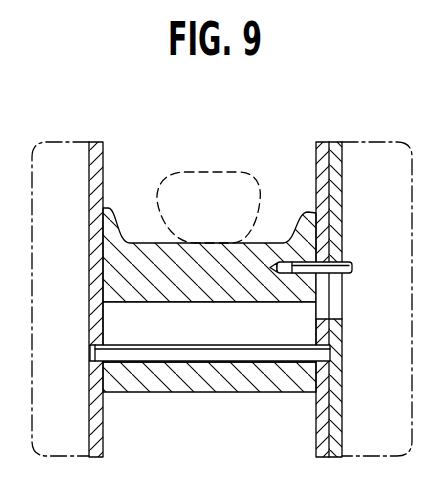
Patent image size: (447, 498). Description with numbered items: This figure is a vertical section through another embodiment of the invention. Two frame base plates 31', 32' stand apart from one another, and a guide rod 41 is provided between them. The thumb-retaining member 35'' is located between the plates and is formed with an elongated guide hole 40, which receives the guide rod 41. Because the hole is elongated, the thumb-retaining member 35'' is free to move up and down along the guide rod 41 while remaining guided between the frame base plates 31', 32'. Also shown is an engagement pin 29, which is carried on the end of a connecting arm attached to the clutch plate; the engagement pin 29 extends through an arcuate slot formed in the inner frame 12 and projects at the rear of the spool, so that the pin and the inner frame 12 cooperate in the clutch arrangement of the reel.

The inner frame 12 is at (345, 142).
The engagement pin 29 is at (291, 262).
The frame base plate 31' is at (320, 277).
The frame base plate 32' is at (104, 279).
The thumb-retaining member 35'' is at (209, 282).
The elongated guide hole 40 is at (112, 312).
The guide rod 41 is at (90, 353).